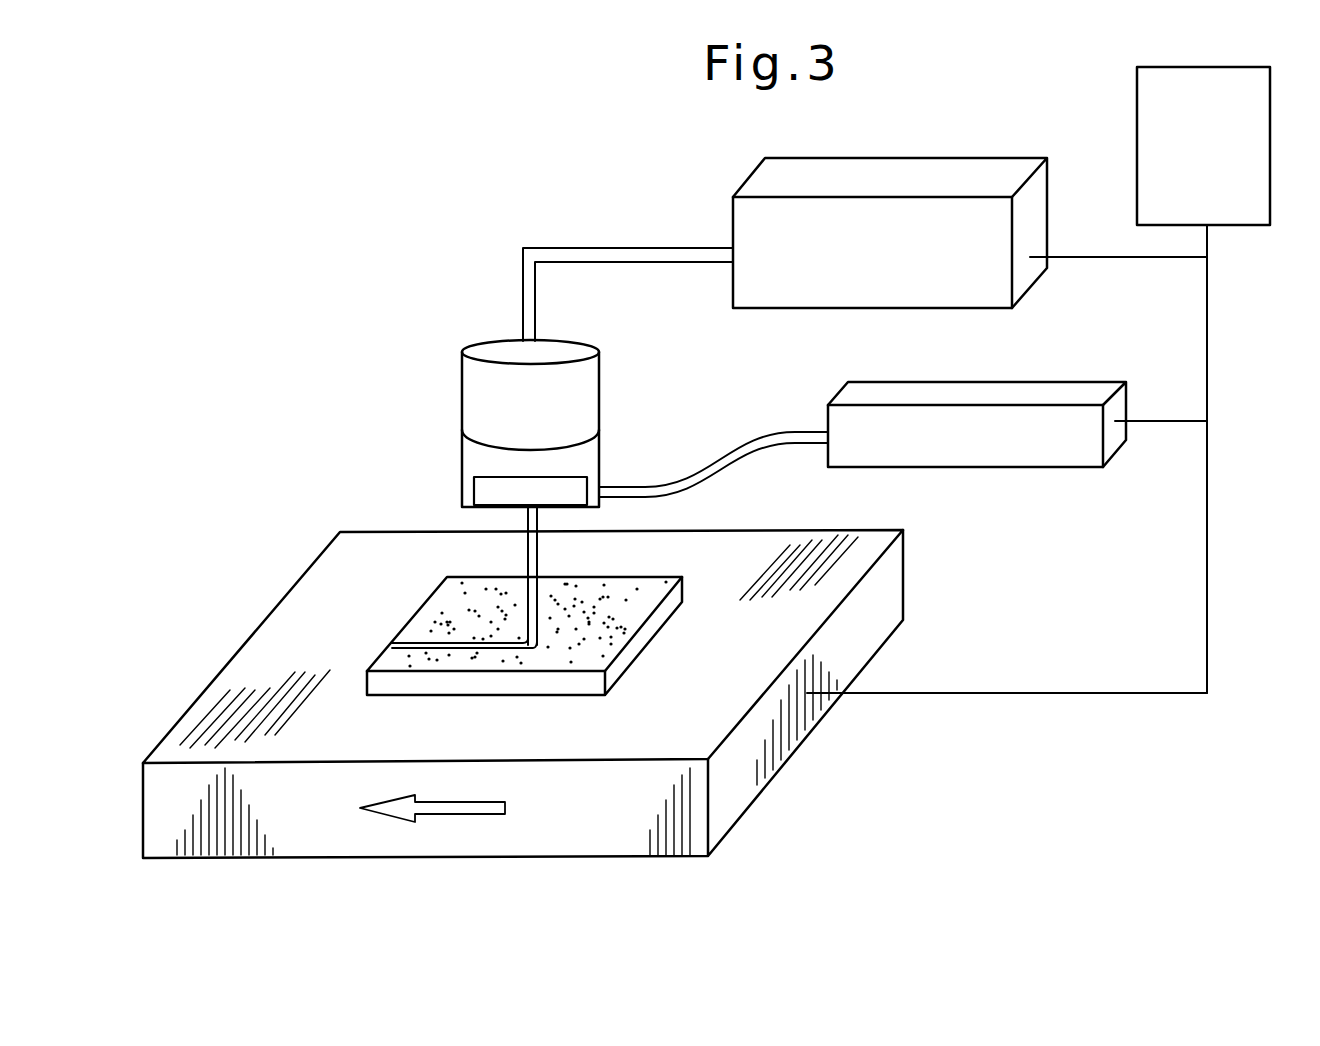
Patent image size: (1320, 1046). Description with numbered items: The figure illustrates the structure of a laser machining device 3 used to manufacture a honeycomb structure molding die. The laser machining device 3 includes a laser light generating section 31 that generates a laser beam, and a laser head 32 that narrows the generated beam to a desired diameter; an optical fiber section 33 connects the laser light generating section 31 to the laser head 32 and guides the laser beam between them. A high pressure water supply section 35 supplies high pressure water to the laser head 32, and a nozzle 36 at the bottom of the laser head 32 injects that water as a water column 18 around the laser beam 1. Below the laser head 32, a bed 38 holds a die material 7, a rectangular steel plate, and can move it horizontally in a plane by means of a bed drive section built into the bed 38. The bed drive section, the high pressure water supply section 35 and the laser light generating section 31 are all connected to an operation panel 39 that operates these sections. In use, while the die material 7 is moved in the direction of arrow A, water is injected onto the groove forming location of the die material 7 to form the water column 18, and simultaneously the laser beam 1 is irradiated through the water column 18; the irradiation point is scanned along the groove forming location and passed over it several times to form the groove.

The laser beam 1 is at (520, 607).
The laser machining device 3 is at (702, 190).
The die material 7 is at (645, 582).
The water column 18 is at (528, 557).
The laser light generating section 31 is at (885, 168).
The laser head 32 is at (468, 390).
The optical fiber section 33 is at (573, 250).
The high pressure water supply section 35 is at (1055, 385).
The nozzle 36 is at (485, 495).
The bed 38 is at (790, 735).
The operation panel 39 is at (1137, 138).